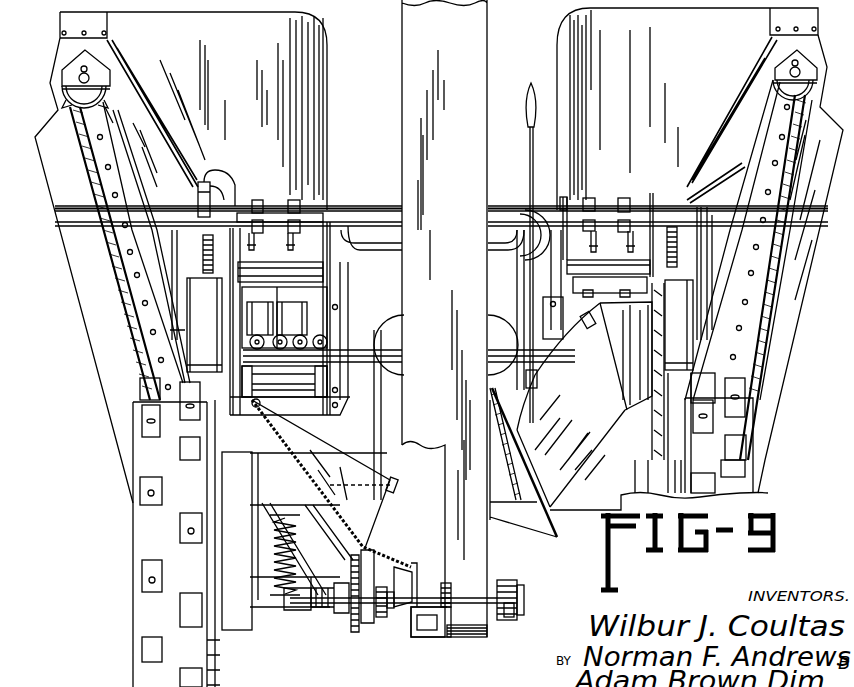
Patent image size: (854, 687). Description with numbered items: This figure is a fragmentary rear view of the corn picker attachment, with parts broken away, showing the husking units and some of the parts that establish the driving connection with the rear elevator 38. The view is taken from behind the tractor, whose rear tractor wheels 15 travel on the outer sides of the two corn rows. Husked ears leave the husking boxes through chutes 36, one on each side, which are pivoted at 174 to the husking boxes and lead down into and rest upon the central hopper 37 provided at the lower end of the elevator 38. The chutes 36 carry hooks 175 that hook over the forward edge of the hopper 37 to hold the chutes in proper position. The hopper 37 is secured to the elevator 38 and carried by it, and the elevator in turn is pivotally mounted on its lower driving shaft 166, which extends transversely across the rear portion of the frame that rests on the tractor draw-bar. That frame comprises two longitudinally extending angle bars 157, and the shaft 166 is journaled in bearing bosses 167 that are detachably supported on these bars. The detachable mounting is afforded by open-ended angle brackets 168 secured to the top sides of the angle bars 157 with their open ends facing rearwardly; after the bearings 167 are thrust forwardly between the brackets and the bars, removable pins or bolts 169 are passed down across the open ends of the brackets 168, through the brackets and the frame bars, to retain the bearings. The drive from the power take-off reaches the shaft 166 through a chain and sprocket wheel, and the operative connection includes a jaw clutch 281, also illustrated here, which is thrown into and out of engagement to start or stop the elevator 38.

The rear tractor wheels 15 is at (140, 665).
The chutes 36 is at (310, 450).
The central hopper 37 is at (494, 500).
The elevator 38 is at (406, 60).
The angle bars 157 is at (385, 618).
The lower driving shaft 166 is at (442, 600).
The bearing bosses 167 is at (386, 608).
The open-ended angle brackets 168 is at (394, 585).
The removable pins or bolts 169 is at (398, 592).
The pivot 174 is at (262, 408).
The hooks 175 is at (392, 480).
The jaw clutch 281 is at (342, 618).